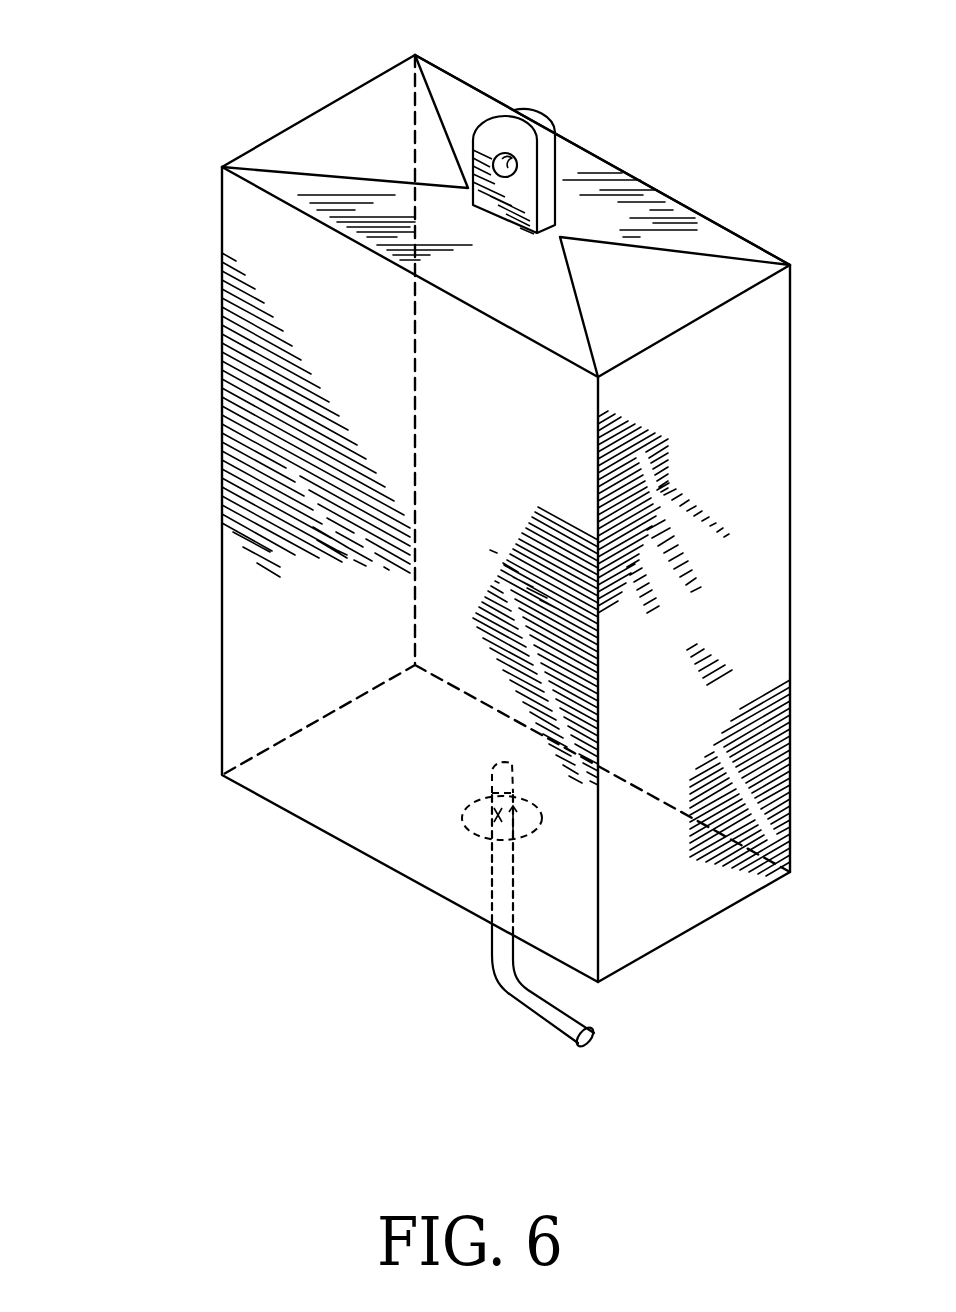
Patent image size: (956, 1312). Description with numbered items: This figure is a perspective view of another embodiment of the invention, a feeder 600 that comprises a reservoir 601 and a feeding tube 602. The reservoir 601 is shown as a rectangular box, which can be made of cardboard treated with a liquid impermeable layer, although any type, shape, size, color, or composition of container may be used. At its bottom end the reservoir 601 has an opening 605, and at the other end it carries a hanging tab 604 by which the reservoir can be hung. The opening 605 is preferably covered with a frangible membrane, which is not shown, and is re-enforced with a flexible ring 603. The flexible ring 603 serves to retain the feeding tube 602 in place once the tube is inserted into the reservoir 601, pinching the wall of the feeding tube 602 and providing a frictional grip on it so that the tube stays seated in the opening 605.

The feeder 600 is at (800, 173).
The reservoir 601 is at (223, 342).
The feeding tube 602 is at (510, 993).
The flexible ring 603 is at (462, 822).
The hanging tab 604 is at (530, 143).
The opening 605 is at (492, 840).